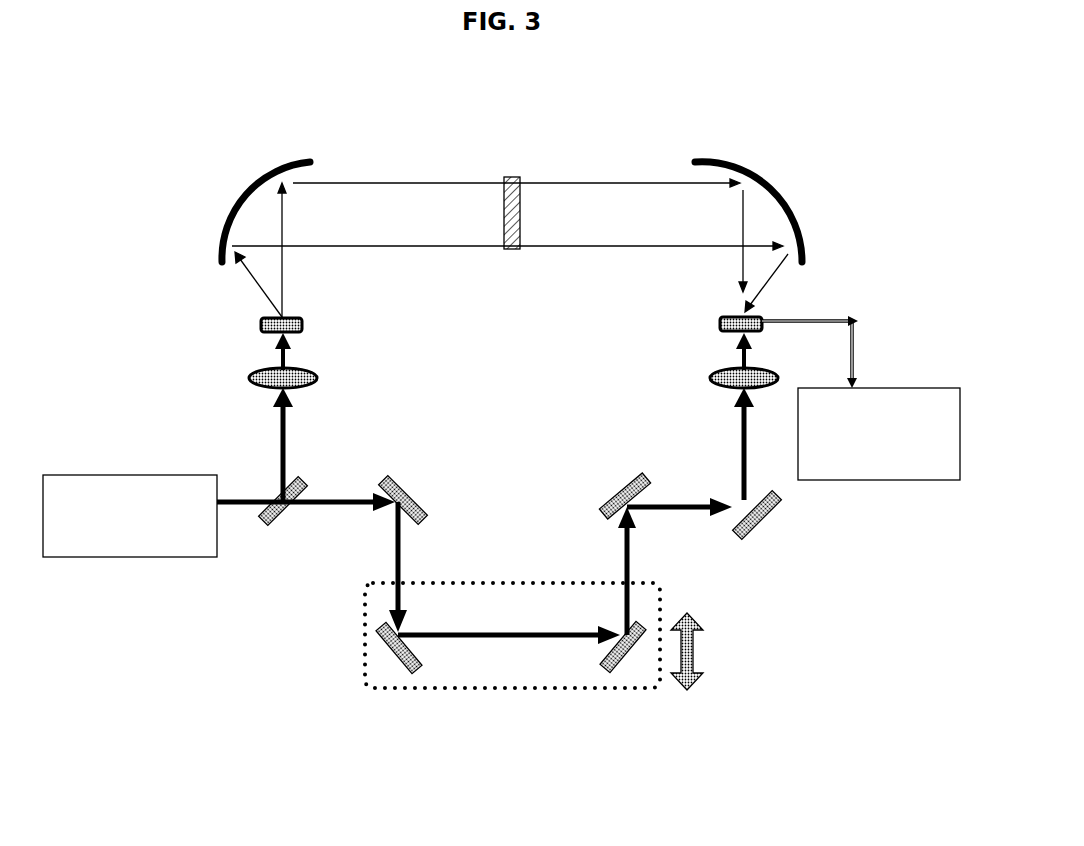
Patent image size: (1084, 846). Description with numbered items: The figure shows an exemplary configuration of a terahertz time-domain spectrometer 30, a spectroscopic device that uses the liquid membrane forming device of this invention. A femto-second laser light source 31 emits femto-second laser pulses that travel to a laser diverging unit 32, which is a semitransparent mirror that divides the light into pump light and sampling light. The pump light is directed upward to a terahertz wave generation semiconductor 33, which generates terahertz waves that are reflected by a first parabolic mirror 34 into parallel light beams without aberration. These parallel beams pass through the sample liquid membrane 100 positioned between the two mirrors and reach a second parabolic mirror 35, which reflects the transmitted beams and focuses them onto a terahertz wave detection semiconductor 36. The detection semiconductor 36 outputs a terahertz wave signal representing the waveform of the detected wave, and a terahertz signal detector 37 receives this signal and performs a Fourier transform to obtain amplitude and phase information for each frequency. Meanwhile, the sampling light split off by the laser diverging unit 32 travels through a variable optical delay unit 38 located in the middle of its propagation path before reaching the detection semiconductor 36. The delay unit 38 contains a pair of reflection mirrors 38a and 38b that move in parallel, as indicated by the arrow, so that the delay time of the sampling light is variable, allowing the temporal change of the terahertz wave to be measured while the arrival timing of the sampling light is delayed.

The terahertz time-domain spectrometer 30 is at (533, 100).
The femto-second laser light source 31 is at (113, 474).
The laser diverging unit 32 is at (267, 529).
The terahertz wave generation semiconductor 33 is at (259, 329).
The first parabolic mirror 34 is at (266, 178).
The second parabolic mirror 35 is at (777, 190).
The terahertz wave detection semiconductor 36 is at (762, 314).
The terahertz signal detector 37 is at (888, 388).
The variable optical delay unit 38 is at (515, 663).
The reflection mirror 38a is at (418, 660).
The reflection mirror 38b is at (600, 662).
The sample liquid membrane 100 is at (512, 250).